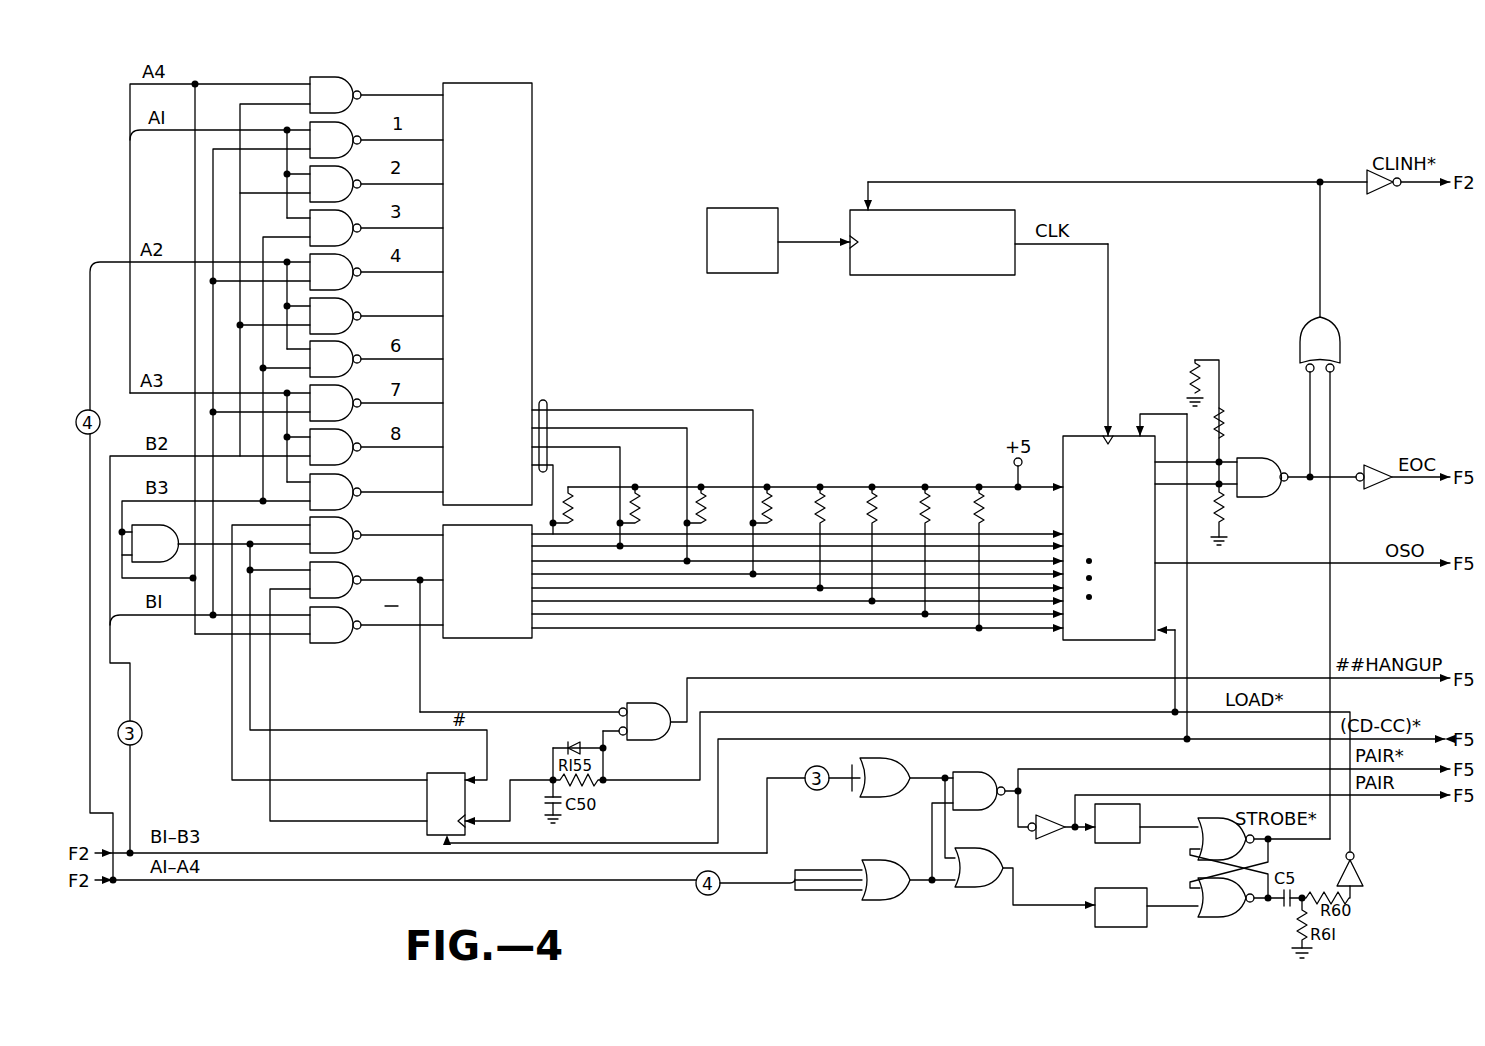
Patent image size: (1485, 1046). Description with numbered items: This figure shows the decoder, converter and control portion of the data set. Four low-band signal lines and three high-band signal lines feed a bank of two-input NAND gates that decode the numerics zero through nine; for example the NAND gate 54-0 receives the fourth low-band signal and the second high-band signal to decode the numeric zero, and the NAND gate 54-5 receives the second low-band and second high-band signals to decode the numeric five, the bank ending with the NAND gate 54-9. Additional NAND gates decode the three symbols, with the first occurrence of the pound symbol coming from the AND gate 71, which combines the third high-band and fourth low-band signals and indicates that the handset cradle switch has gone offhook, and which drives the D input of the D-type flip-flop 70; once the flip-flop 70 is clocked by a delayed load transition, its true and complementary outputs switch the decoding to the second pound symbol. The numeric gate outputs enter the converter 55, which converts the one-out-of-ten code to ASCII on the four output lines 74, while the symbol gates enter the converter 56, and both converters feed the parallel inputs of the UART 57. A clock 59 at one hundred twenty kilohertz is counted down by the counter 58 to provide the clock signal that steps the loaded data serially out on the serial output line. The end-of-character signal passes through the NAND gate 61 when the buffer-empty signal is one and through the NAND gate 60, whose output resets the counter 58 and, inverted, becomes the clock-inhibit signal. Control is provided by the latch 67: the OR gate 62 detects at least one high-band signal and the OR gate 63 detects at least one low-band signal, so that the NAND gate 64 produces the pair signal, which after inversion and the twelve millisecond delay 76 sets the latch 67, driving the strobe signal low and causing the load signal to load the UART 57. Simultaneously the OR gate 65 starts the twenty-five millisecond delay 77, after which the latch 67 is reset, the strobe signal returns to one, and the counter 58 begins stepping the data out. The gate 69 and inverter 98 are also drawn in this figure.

The NAND gate 54-0 is at (338, 78).
The NAND gate 54-5 is at (340, 299).
The NAND gate 54-9 is at (340, 475).
The converter 55 is at (532, 145).
The converter 56 is at (532, 638).
The universal asynchronous receiver/transmitter (UART) 57 is at (1068, 436).
The counter 58 is at (918, 275).
The clock 59 is at (740, 273).
The NAND gate 60 is at (1340, 345).
The NAND gate 61 is at (1250, 458).
The OR gate 62 is at (900, 758).
The OR gate 63 is at (895, 860).
The NAND gate 64 is at (975, 772).
The OR gate 65 is at (985, 887).
The latch 67 is at (1235, 917).
The AND gate 69 is at (645, 703).
The D-type flip-flop 70 is at (437, 773).
The AND gate 71 is at (150, 525).
The output lines 74 is at (543, 400).
The 12 millisecond delay 76 is at (1112, 843).
The 25 millisecond delay 77 is at (1120, 888).
The inverter 98 is at (1360, 876).